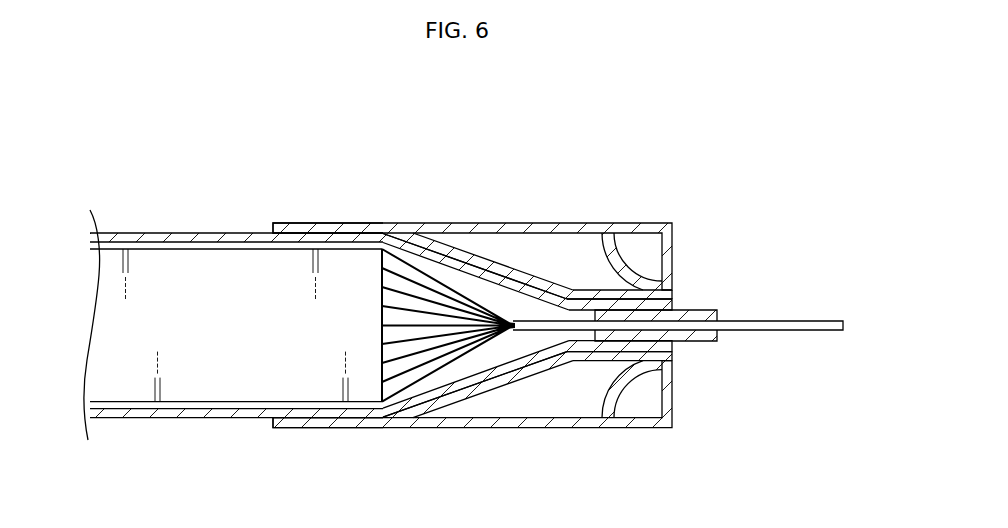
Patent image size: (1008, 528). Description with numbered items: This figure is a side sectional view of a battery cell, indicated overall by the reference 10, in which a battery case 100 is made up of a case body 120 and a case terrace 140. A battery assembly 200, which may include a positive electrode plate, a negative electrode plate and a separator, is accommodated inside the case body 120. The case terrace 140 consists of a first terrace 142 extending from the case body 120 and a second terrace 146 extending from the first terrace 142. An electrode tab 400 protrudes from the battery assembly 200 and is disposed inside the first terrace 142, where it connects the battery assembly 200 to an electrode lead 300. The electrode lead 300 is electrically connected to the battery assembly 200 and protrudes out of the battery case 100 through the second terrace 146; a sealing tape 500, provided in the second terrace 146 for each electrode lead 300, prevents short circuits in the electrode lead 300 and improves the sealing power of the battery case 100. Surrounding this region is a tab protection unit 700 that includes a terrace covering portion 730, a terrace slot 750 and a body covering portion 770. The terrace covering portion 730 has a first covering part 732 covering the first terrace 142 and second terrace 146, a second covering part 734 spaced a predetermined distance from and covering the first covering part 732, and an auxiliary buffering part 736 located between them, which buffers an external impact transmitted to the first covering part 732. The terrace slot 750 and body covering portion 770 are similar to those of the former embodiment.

The optical connector device 10 is at (184, 147).
The battery case 100 is at (155, 434).
The case body 120 is at (200, 413).
The battery assembly 200 is at (190, 273).
The case terrace 140 is at (681, 350).
The first terrace 142 is at (461, 272).
The second terrace 146 is at (664, 306).
The electrode lead 300 is at (788, 320).
The electrode tab 400 is at (437, 379).
The sealing tape 500 is at (718, 337).
The tab protection unit 700 is at (506, 436).
The terrace covering portion 730 is at (676, 213).
The first covering part 732 is at (503, 270).
The second covering part 734 is at (554, 229).
The auxiliary buffering part 736 is at (630, 268).
The terrace slot 750 is at (670, 299).
The body covering portion 770 is at (303, 229).